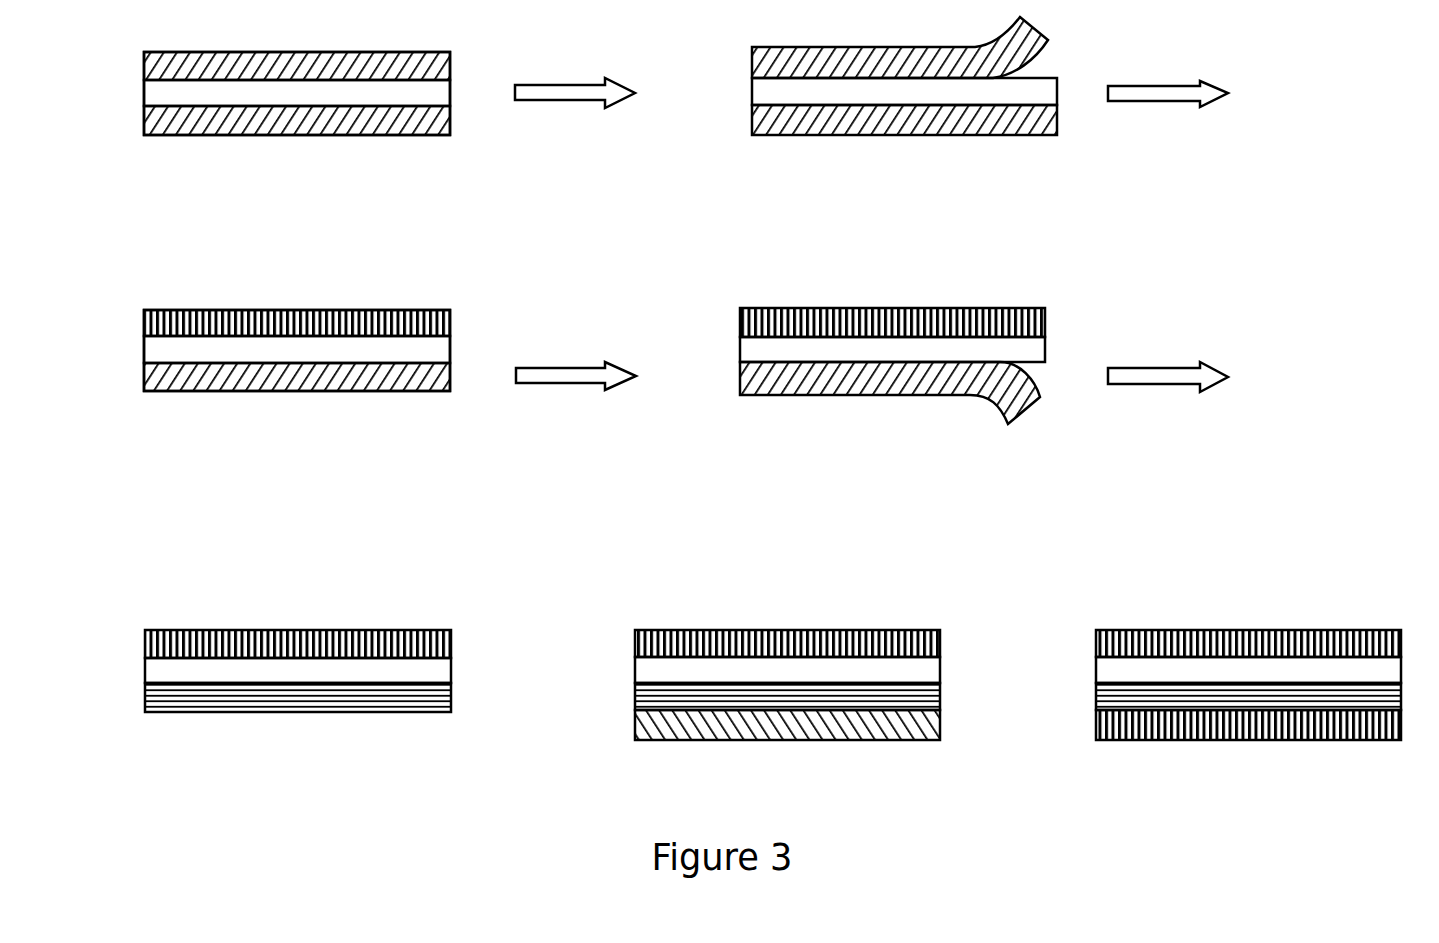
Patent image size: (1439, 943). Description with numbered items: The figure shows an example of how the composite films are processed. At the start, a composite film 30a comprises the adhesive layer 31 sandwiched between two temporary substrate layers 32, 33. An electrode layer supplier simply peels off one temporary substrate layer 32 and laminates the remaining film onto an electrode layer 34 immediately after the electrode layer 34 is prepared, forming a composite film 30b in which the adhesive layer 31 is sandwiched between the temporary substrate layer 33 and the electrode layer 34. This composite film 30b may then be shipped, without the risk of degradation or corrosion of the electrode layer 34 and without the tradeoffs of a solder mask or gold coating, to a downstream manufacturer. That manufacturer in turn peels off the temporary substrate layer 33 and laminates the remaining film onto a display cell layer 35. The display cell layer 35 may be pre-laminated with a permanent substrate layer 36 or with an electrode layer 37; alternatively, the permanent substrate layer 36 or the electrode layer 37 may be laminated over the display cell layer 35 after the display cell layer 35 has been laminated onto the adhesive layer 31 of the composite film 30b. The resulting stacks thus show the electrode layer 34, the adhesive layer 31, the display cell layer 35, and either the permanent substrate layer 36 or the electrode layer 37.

The composite film 30a is at (297, 146).
The composite film 30b is at (297, 405).
The adhesive layer 31 is at (118, 93).
The temporary substrate layer 32 is at (118, 67).
The temporary substrate layer 33 is at (118, 119).
The electrode layer 34 is at (118, 323).
The display cell layer 35 is at (120, 697).
The permanent substrate layer 36 is at (610, 737).
The electrode layer 37 is at (1071, 737).